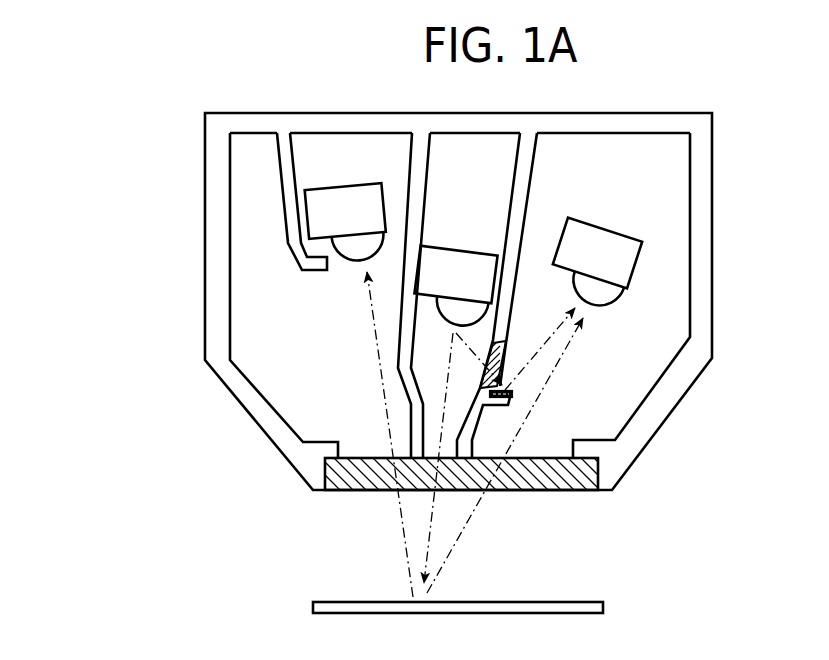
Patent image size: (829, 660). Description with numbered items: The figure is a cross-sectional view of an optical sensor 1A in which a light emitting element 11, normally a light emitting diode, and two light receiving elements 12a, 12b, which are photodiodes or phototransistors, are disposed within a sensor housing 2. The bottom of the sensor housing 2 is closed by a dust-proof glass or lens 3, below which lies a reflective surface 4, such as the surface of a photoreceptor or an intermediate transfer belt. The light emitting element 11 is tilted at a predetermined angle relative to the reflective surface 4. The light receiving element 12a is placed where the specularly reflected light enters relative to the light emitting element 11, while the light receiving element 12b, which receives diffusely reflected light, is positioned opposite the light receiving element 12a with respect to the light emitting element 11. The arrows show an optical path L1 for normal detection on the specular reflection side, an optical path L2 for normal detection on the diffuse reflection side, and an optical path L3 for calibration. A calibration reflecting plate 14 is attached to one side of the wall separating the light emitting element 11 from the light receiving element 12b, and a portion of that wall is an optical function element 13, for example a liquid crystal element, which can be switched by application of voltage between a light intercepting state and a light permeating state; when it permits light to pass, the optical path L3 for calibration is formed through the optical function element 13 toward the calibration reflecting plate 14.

The optical sensor 1A is at (752, 140).
The sensor housing 2 is at (253, 420).
The dust-proof glass or lens 3 is at (560, 493).
The reflective surface 4 is at (590, 599).
The light emitting element 11 is at (465, 257).
The light receiving element 12a is at (343, 191).
The light receiving element 12b is at (600, 233).
The optical function element 13 is at (495, 347).
The calibration reflecting plate 14 is at (512, 393).
The optical path for normal detection on the specular reflection side L1 is at (398, 530).
The optical path for normal detection on the diffuse reflection side L2 is at (456, 545).
The optical path for calibration L3 is at (536, 355).